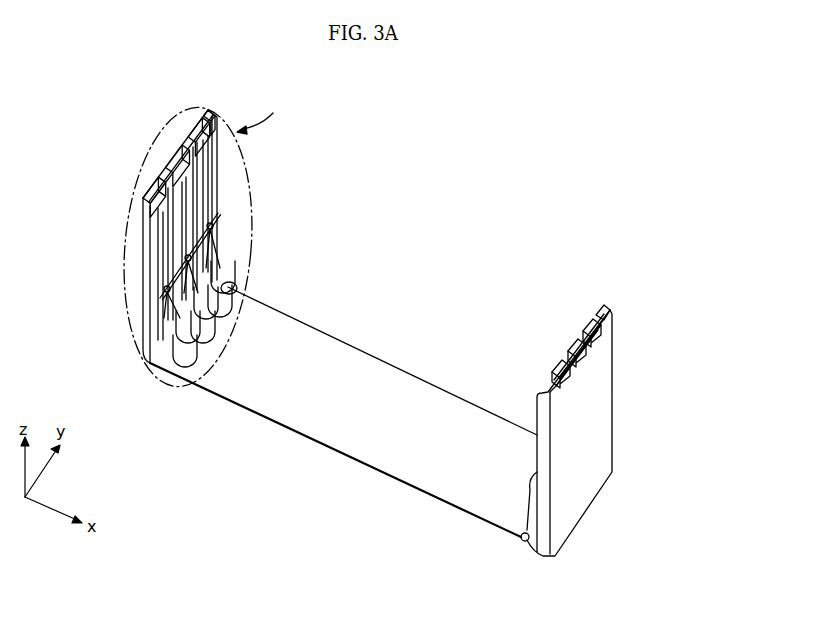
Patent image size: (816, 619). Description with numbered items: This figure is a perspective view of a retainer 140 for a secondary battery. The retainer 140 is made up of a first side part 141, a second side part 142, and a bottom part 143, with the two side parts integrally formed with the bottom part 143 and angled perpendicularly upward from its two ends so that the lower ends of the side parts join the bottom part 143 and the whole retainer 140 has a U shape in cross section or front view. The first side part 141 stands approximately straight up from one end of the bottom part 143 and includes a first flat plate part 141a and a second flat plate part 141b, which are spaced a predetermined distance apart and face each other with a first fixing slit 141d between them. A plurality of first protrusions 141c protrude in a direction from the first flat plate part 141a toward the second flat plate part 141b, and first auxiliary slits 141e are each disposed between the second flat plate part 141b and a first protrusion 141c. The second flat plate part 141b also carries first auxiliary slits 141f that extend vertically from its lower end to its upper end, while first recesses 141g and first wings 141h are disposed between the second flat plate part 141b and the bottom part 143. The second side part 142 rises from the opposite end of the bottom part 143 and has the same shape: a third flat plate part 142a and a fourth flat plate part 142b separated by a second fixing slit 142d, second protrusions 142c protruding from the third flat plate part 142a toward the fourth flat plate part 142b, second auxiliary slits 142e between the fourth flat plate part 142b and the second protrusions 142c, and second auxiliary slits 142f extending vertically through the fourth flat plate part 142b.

The retainer 140 is at (662, 131).
The first side part 141 is at (132, 296).
The first flat plate part 141a is at (170, 170).
The second flat plate part 141b is at (162, 165).
The first protrusion 141c is at (140, 190).
The first fixing slit 141d is at (182, 166).
The first auxiliary slit 141e is at (197, 125).
The first auxiliary slit 141f is at (197, 183).
The first recess 141g is at (235, 283).
The first wing 141h is at (220, 250).
The second side part 142 is at (610, 296).
The third flat plate part 142a is at (585, 353).
The fourth flat plate part 142b is at (565, 357).
The second protrusion 142c is at (595, 310).
The second fixing slit 142d is at (573, 377).
The second auxiliary slit 142e is at (567, 383).
The second auxiliary slit 142f is at (580, 338).
The bottom part 143 is at (340, 437).